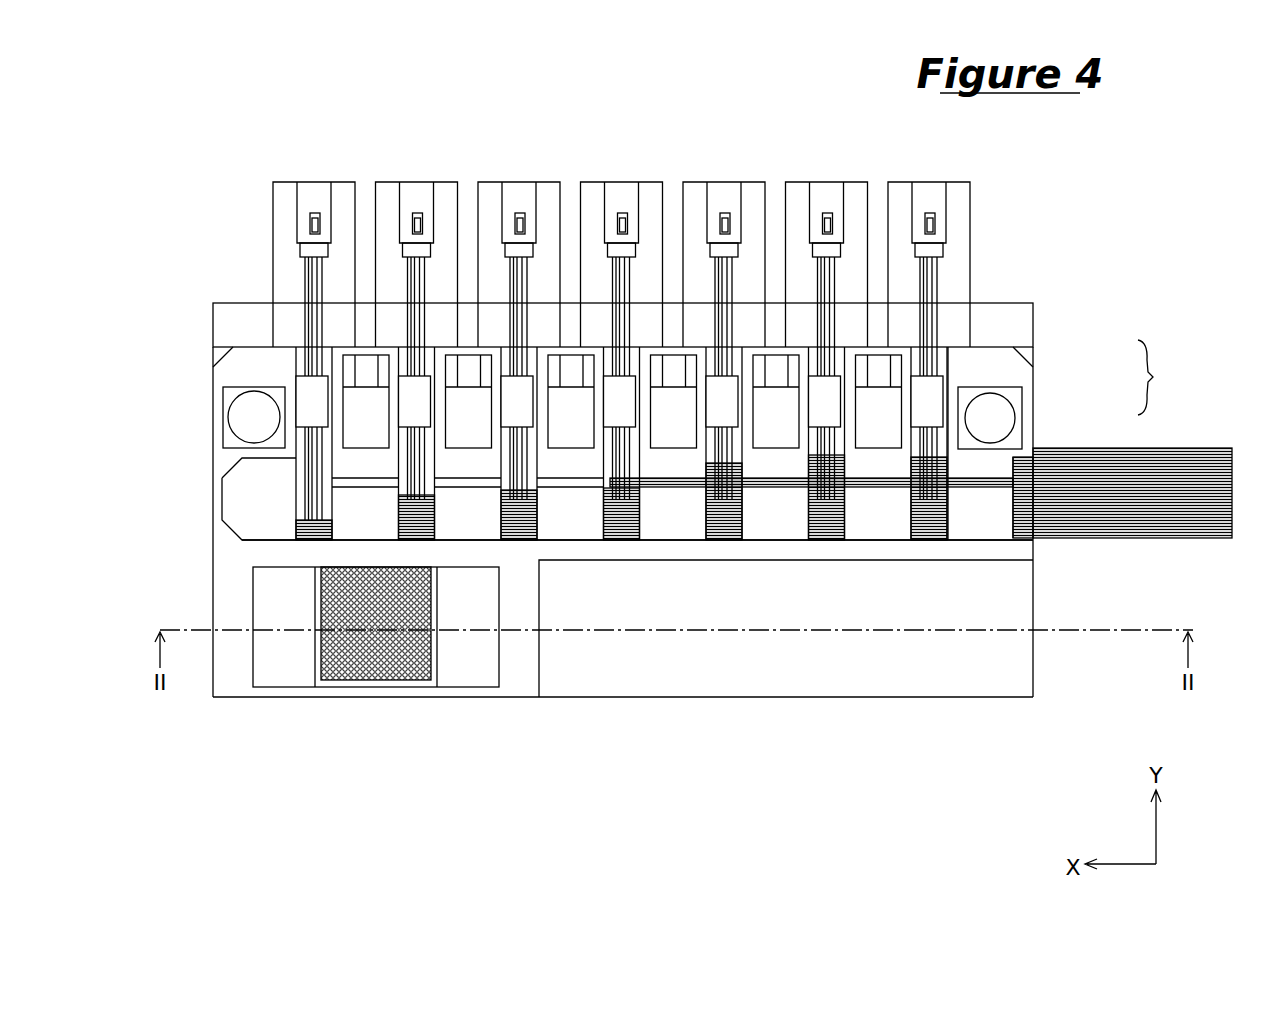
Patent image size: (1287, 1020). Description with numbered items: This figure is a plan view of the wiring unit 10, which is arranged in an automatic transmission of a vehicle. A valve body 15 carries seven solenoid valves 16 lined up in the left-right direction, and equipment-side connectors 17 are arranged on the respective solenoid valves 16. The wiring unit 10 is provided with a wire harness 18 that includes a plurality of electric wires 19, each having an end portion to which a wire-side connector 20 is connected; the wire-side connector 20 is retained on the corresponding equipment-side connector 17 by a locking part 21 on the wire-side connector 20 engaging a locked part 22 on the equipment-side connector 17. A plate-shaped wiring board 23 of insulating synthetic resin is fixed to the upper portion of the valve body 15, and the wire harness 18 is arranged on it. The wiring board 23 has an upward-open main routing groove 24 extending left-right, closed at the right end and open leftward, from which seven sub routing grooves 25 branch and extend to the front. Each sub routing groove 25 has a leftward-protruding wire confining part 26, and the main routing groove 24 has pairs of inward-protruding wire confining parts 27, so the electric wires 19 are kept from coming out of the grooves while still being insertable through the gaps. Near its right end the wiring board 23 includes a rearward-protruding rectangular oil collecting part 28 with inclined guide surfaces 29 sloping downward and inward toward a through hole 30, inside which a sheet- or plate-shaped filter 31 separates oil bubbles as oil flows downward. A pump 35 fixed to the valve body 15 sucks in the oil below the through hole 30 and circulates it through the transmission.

The wiring unit 10 is at (1160, 377).
The valve body 15 is at (1015, 323).
The solenoid valve 16 is at (283, 188).
The equipment-side connector 17 is at (305, 188).
The wire harness 18 is at (1070, 448).
The electric wire 19 is at (318, 278).
The wire-side connector 20 is at (290, 245).
The locking part 21 is at (314, 218).
The locked part 22 is at (343, 185).
The wiring board 23 is at (1017, 372).
The main routing groove 24 is at (265, 525).
The sub routing groove 25 is at (300, 345).
The wire confining part 26 is at (315, 397).
The wire confining part 27 is at (667, 498).
The oil collecting part 28 is at (518, 682).
The inclined guide surface 29 is at (280, 672).
The through hole 30 is at (376, 675).
The filter 31 is at (350, 680).
The pump 35 is at (895, 680).